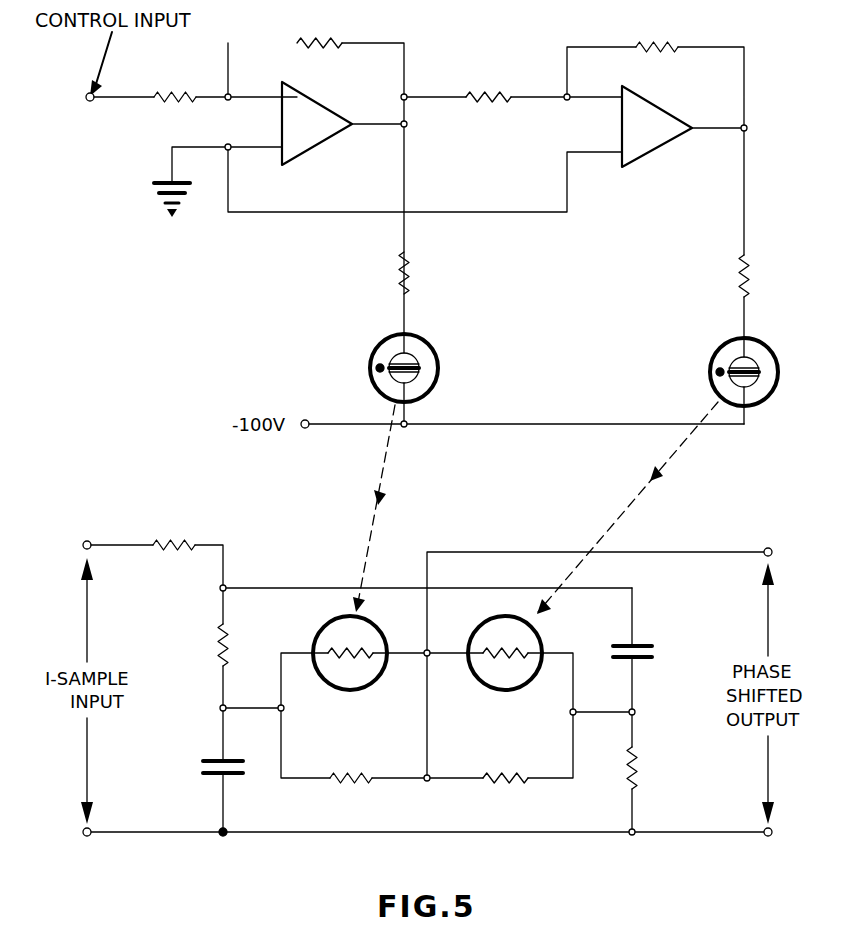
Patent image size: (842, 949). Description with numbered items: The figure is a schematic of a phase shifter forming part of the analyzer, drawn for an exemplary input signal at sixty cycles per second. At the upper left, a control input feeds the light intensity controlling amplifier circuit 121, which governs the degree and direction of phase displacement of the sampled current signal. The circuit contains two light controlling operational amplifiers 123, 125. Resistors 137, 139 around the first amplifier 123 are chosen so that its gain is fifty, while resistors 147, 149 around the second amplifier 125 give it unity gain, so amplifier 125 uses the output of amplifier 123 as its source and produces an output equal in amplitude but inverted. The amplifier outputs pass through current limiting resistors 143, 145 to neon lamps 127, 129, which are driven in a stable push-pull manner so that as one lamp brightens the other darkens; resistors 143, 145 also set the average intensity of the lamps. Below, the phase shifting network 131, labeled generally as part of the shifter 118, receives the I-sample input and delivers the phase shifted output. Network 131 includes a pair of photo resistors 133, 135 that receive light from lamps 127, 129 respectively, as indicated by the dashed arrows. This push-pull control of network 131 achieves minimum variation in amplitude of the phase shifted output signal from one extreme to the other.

The phase shifting network 118 is at (705, 500).
The light intensity controlling amplifier circuit 121 is at (128, 143).
The light controlling operational amplifier 123 is at (312, 151).
The light controlling operational amplifier 125 is at (649, 160).
The neon lamp 127 is at (440, 356).
The neon lamp 129 is at (709, 356).
The phase shifting network 131 is at (427, 666).
The photo resistor 133 is at (348, 692).
The photo resistor 135 is at (501, 692).
The resistor 137 is at (172, 91).
The resistor 139 is at (318, 41).
The current limiting resistor 143 is at (410, 273).
The current limiting resistor 145 is at (738, 280).
The resistor 147 is at (487, 92).
The resistor 149 is at (672, 44).